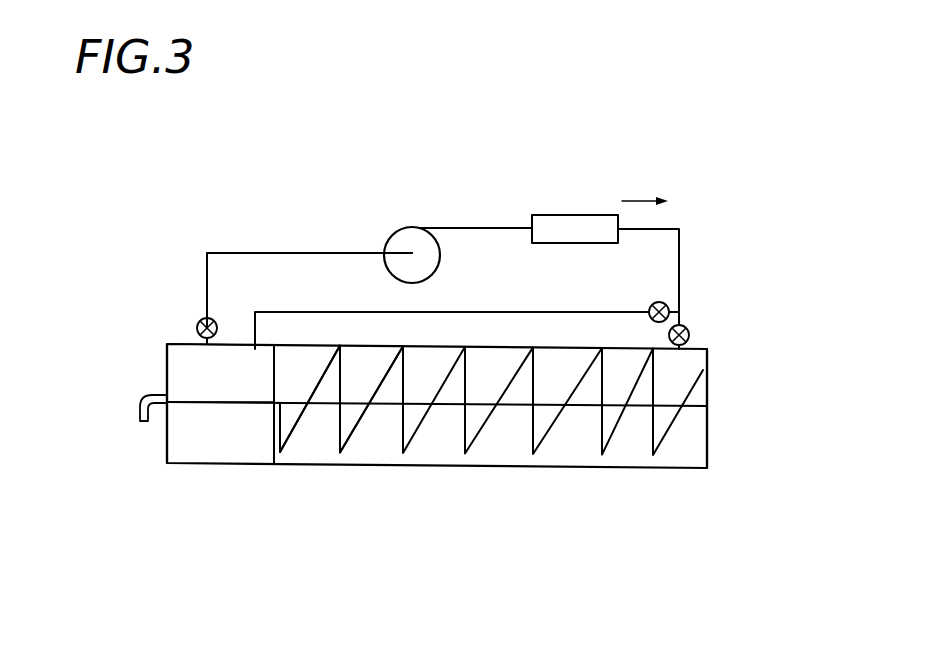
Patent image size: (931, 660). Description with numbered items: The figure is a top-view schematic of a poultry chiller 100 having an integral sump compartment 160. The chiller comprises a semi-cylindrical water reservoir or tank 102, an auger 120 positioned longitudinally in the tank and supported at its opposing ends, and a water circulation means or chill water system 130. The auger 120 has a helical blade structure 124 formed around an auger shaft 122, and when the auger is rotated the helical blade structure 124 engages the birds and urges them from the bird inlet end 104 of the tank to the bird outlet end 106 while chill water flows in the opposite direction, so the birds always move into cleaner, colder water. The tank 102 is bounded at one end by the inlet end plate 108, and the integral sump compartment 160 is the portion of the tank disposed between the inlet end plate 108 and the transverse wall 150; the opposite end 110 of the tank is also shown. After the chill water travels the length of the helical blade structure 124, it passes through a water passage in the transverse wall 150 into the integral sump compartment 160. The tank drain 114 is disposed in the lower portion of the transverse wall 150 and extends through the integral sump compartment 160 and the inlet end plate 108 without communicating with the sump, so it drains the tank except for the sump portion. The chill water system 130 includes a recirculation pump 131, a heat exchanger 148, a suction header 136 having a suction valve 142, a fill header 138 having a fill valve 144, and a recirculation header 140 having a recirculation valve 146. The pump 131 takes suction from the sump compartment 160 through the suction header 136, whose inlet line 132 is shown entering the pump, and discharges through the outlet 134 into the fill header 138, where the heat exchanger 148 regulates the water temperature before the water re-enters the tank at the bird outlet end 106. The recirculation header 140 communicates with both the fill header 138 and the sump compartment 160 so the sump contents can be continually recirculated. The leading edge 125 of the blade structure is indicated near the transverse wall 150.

The poultry chiller 100 is at (140, 550).
The tank 102 is at (593, 466).
The bird inlet end 104 is at (97, 406).
The bird outlet end 106 is at (795, 410).
The inlet end plate 108 is at (167, 363).
The second end wall 110 is at (707, 447).
The tank drain 114 is at (158, 415).
The auger 120 is at (503, 450).
The auger shaft 122 is at (235, 404).
The helical blade structure 124 is at (350, 437).
The blade edge 125 is at (290, 408).
The chill water system 130 is at (285, 188).
The recirculation pump 131 is at (402, 232).
The supply line 132 is at (327, 253).
The outlet 134 is at (462, 228).
The suction header 136 is at (243, 252).
The fill header 138 is at (680, 245).
The recirculation header 140 is at (520, 295).
The suction valve 142 is at (180, 305).
The fill valve 144 is at (715, 312).
The recirculation valve 146 is at (640, 292).
The heat exchanger 148 is at (578, 215).
The transverse wall 150 is at (268, 450).
The integral sump compartment 160 is at (193, 382).